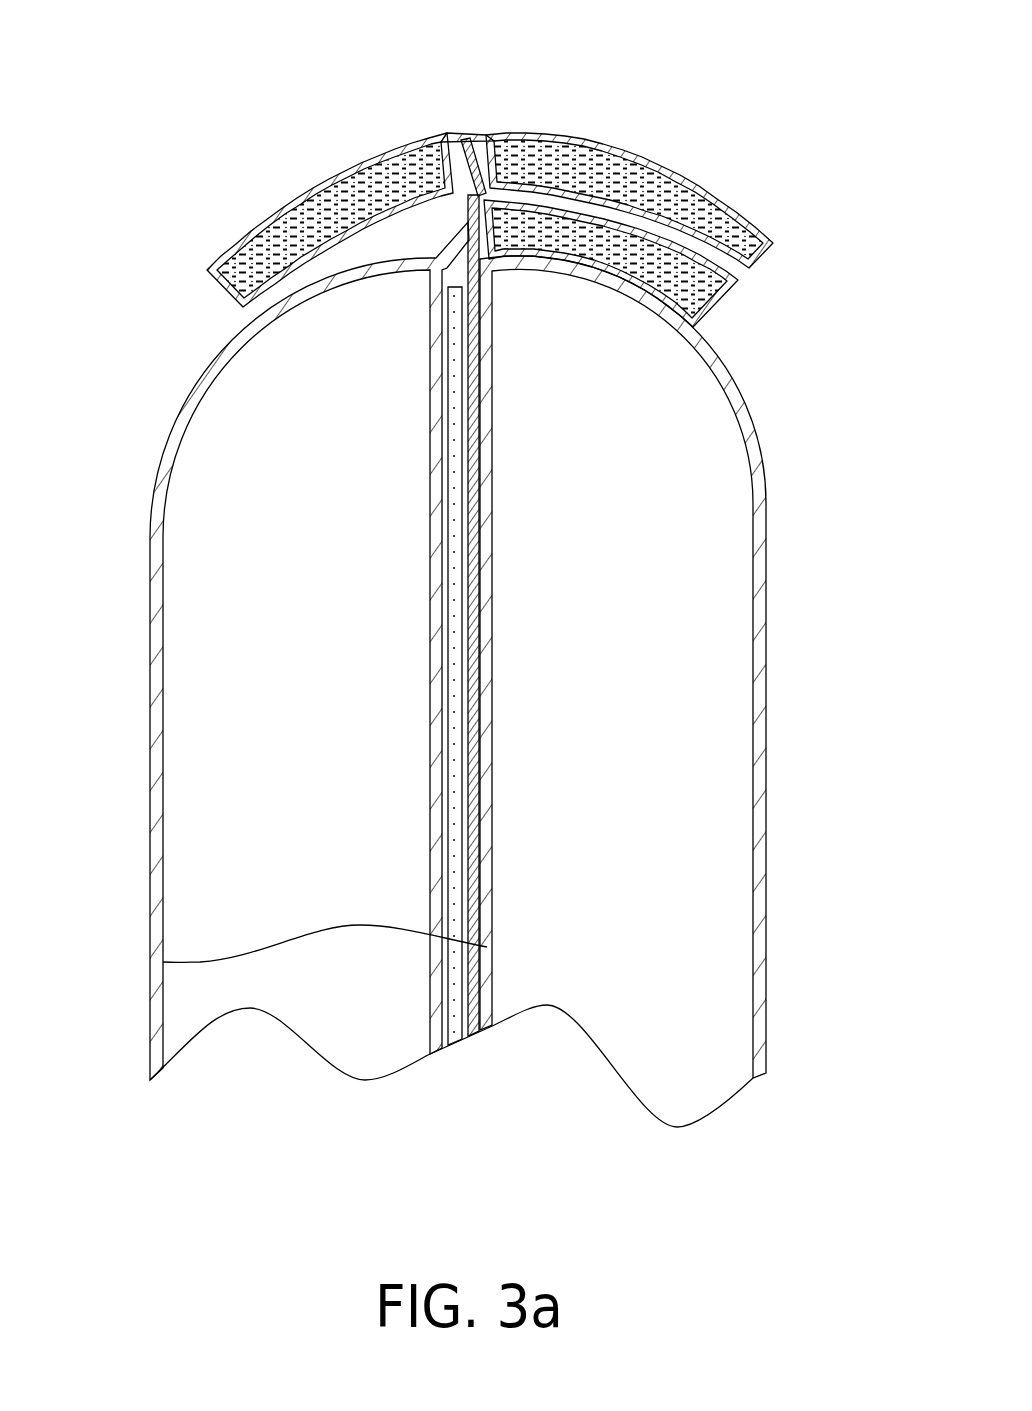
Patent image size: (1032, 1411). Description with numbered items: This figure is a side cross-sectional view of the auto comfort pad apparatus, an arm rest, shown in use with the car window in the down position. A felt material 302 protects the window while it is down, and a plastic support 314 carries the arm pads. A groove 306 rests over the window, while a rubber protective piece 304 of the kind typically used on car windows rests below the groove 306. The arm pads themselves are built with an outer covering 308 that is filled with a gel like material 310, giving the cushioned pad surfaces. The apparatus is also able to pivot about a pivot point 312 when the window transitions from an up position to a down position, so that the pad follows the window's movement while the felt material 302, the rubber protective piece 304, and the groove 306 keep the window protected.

The felt material 302 is at (163, 962).
The rubber protective piece 304 is at (455, 252).
The groove 306 is at (491, 135).
The outer covering 308 is at (555, 132).
The gel like material 310 is at (672, 190).
The pivot point 312 is at (733, 280).
The plastic support 314 is at (470, 1005).